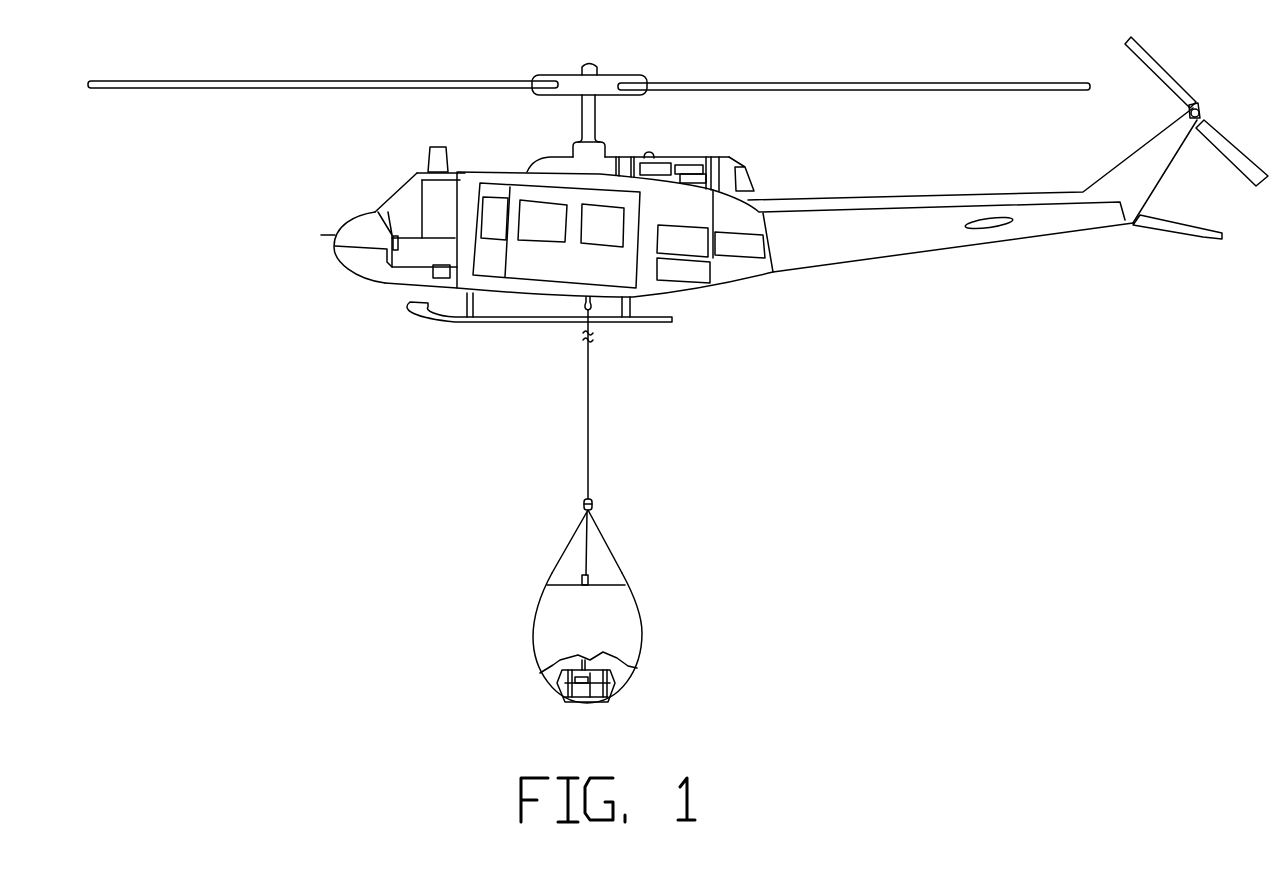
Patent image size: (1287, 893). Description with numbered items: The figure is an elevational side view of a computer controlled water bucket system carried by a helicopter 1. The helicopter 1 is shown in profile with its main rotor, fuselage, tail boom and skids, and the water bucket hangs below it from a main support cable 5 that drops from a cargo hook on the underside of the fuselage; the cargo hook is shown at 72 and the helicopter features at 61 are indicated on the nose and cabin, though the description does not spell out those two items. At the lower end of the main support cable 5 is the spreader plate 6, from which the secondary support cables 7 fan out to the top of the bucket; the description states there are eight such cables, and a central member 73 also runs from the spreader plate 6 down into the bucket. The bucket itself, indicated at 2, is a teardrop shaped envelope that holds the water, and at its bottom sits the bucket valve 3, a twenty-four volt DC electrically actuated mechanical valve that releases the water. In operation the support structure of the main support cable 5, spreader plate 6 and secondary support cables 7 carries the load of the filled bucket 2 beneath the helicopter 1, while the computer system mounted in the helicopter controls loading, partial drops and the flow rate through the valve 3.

The helicopter 1 is at (733, 272).
The water bag 2 is at (613, 607).
The bucket valve 3 is at (560, 675).
The main support cable 5 is at (590, 417).
The spreader plate 6 is at (591, 500).
The secondary support cables 7 is at (608, 547).
The sensors 61 is at (435, 272).
The cargo hook 72 is at (585, 303).
The central rope 73 is at (585, 543).